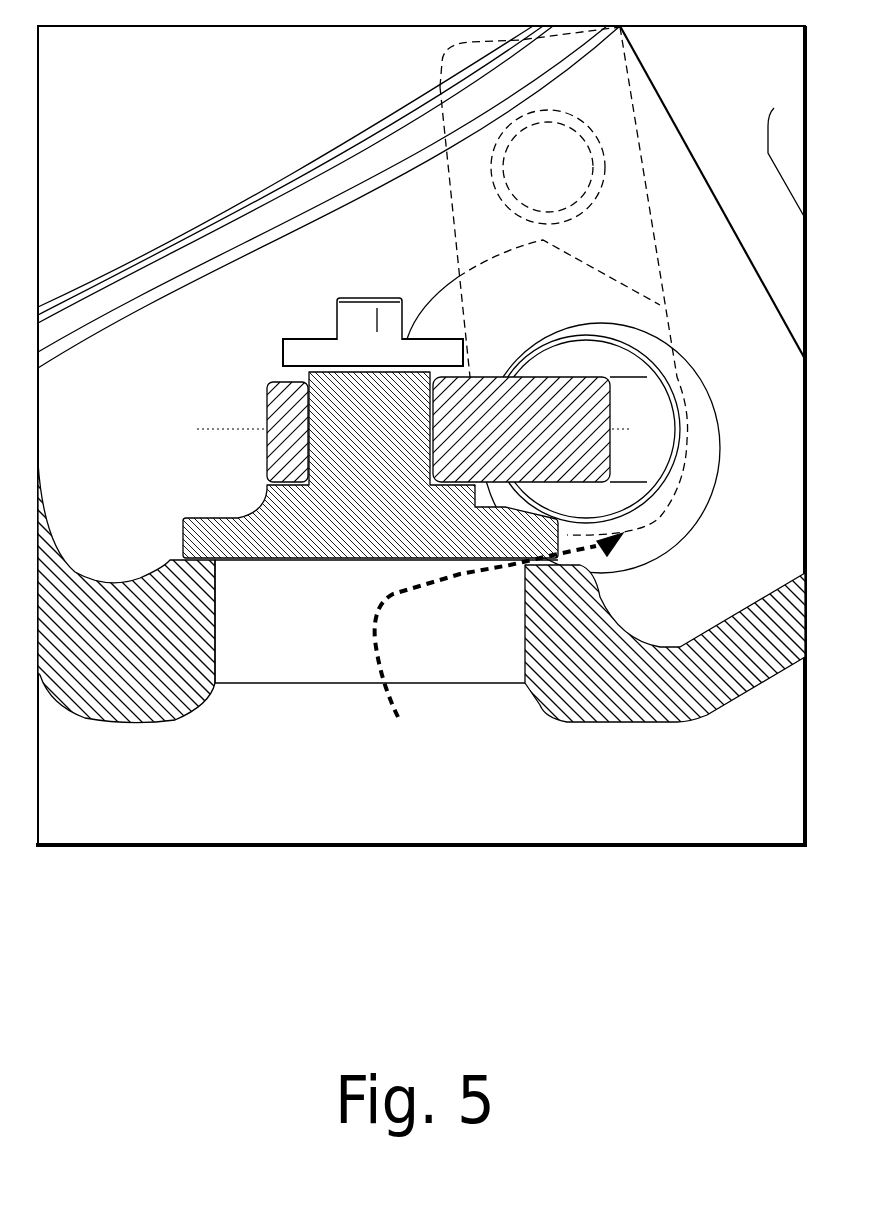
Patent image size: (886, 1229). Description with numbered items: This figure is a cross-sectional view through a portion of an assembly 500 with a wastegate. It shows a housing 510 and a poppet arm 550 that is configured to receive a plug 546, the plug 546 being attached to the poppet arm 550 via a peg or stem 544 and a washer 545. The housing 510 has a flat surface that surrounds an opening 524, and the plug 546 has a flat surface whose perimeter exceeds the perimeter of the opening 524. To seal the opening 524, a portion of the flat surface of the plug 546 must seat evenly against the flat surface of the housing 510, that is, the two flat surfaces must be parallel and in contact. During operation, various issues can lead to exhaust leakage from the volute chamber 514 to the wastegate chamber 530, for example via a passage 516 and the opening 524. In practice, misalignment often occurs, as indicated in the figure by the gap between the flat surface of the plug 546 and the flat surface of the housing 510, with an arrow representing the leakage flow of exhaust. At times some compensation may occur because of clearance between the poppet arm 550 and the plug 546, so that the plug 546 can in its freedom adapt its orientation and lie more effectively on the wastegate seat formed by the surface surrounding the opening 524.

The assembly 500 is at (115, 85).
The housing 510 is at (146, 671).
The volute chamber 514 is at (518, 777).
The passage 516 is at (215, 683).
The opening 524 is at (215, 567).
The wastegate chamber 530 is at (206, 360).
The peg or stem 544 is at (365, 297).
The washer 545 is at (298, 340).
The plug 546 is at (220, 522).
The poppet arm 550 is at (563, 468).